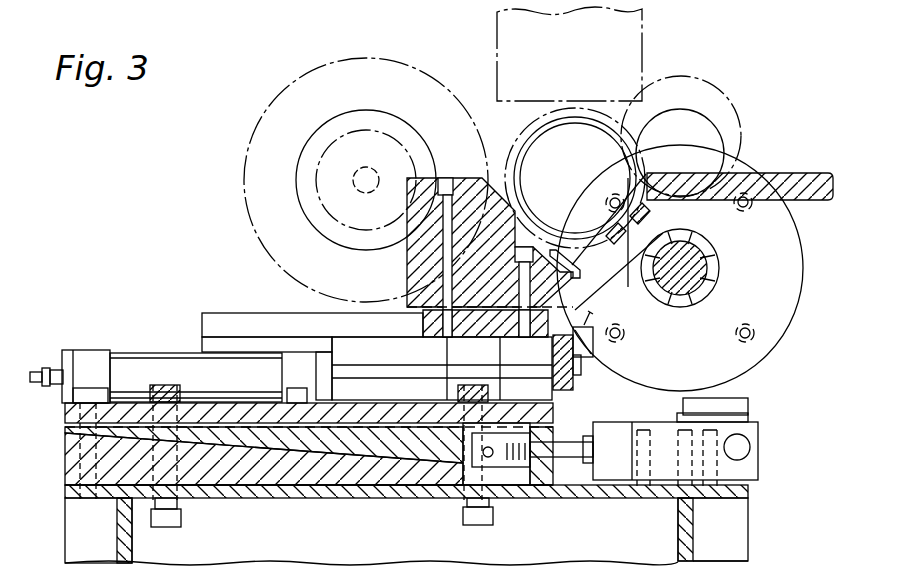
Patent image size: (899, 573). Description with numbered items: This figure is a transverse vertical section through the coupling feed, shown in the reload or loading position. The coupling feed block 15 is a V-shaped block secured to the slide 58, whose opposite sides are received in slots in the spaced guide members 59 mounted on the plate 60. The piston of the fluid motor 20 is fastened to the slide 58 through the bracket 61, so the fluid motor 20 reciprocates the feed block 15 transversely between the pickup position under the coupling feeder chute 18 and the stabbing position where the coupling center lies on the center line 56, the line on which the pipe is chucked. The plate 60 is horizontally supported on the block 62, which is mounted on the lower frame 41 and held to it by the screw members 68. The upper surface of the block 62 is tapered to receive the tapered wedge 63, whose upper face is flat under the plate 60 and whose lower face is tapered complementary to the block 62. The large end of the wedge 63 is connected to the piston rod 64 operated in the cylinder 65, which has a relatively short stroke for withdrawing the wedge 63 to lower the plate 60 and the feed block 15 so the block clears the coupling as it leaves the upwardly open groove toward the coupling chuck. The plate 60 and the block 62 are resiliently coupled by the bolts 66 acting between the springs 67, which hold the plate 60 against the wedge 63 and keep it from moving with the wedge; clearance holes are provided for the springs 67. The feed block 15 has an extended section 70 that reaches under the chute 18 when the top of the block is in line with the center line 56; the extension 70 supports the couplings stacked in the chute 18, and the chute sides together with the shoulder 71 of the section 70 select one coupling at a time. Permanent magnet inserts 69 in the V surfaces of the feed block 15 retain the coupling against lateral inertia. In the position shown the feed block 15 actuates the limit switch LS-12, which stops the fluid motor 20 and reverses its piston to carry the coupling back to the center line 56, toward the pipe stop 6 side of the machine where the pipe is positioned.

The pipe stop 6 is at (782, 231).
The coupling feed block 15 is at (410, 270).
The coupling feeder chute 18 is at (642, 30).
The fluid motor 20 is at (150, 370).
The lower frame 41 is at (310, 490).
The center line 56 is at (380, 172).
The slide 58 is at (423, 325).
The guide members 59 is at (355, 352).
The plate 60 is at (390, 403).
The bracket 61 is at (557, 388).
The block 62 is at (263, 470).
The tapered wedge 63 is at (348, 448).
The piston rod 64 is at (572, 460).
The cylinder 65 is at (615, 440).
The bolts 66 is at (166, 530).
The springs 67 is at (182, 508).
The screw members 68 is at (86, 466).
The permanent magnet inserts 69 is at (567, 208).
The extended section 70 is at (798, 173).
The shoulder 71 is at (645, 142).
The limit switch LS-12 is at (593, 337).